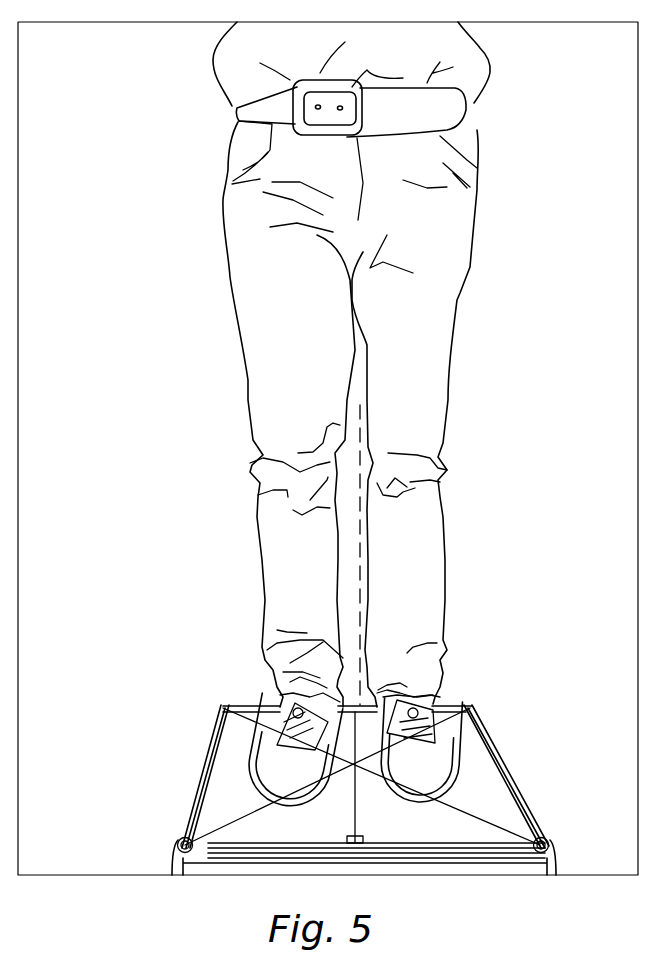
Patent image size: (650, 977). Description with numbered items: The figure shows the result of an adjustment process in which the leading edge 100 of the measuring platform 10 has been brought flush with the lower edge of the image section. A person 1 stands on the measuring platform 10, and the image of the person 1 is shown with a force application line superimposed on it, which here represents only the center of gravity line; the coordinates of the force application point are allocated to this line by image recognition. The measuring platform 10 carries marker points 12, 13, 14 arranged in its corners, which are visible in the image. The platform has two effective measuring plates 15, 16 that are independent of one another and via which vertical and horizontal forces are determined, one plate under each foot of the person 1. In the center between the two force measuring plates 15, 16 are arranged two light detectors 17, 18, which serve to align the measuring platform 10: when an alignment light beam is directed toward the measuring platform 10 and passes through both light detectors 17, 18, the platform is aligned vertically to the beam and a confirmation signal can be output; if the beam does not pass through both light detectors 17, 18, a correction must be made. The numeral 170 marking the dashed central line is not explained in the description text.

The person 1 is at (525, 435).
The measuring platform 10 is at (563, 763).
The marker point 12 is at (180, 840).
The marker point 13 is at (223, 704).
The marker point 14 is at (472, 707).
The force measuring plate 15 is at (222, 782).
The force measuring plate 16 is at (472, 760).
The light detector 17 is at (355, 845).
The light detector 18 is at (338, 707).
The leading edge 100 is at (543, 865).
The vertical center axis 170 is at (364, 411).